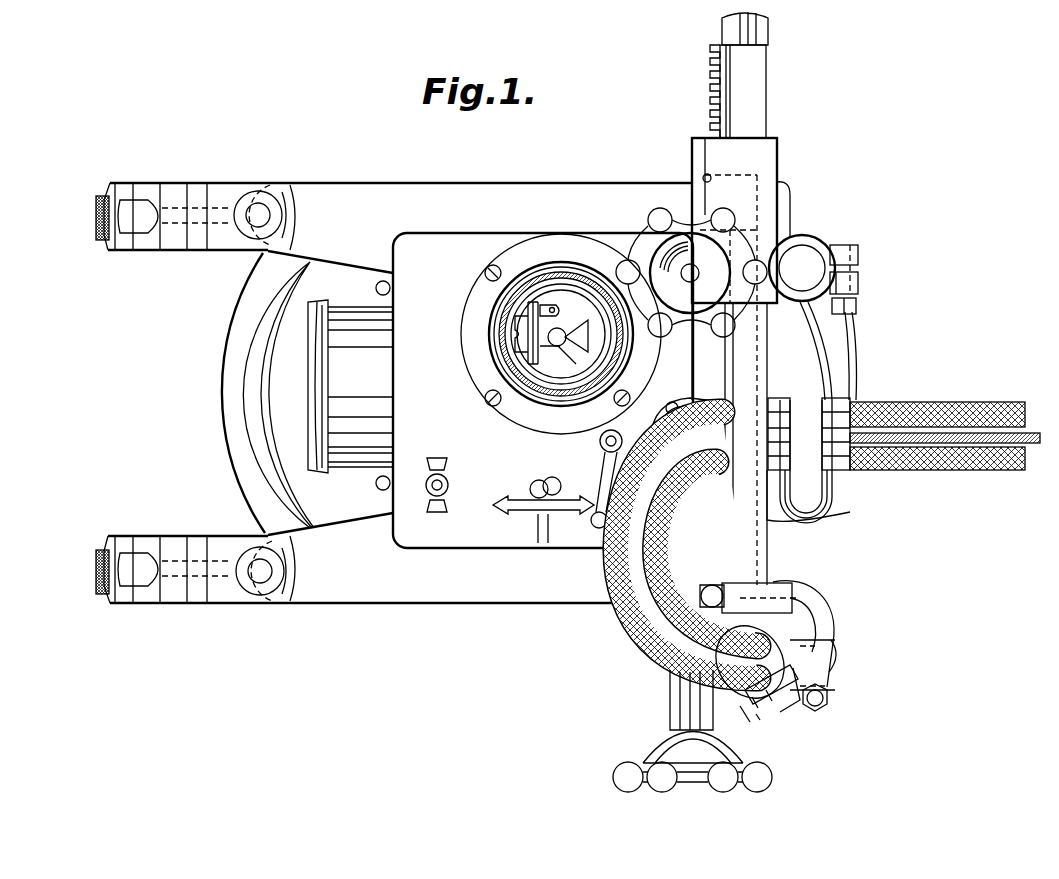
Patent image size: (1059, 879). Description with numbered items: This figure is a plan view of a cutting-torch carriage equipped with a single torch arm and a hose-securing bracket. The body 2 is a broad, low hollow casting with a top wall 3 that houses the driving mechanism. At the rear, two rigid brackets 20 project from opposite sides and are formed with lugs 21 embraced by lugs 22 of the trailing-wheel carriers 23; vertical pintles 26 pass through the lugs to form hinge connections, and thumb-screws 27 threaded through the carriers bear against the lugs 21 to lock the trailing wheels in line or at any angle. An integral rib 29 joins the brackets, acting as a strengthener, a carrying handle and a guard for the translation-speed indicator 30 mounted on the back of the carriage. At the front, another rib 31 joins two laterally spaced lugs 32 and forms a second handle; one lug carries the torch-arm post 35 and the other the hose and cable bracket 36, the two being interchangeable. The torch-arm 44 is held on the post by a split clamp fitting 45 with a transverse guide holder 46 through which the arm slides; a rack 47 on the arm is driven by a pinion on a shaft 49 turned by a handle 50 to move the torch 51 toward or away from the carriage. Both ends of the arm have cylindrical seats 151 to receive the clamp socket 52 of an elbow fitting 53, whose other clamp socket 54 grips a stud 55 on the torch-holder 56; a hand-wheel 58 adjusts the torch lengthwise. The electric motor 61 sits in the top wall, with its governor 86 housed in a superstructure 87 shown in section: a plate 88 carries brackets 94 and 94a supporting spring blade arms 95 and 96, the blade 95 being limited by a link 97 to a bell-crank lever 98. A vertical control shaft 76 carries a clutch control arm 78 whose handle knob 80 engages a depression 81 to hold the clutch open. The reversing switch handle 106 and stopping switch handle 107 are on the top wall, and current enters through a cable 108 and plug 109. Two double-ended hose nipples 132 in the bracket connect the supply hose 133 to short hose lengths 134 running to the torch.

The body 2 is at (462, 606).
The top wall 3 is at (543, 390).
The rigid brackets 20 is at (324, 190).
The lugs 21 is at (284, 186).
The lugs 22 is at (262, 190).
The trailing-wheel carriers 23 is at (172, 183).
The vertical pintles 26 is at (262, 215).
The thumb-screws 27 is at (103, 215).
The integral rib 29 is at (236, 458).
The translation-speed indicator 30 is at (346, 473).
The rib 31 is at (832, 350).
The lugs 32 is at (790, 240).
The torch-arm post 35 is at (802, 268).
The hose and cable bracket 36 is at (818, 508).
The torch-arm 44 is at (766, 108).
The split clamp fitting 45 is at (836, 244).
The transverse guide holder 46 is at (777, 166).
The rack 47 is at (710, 102).
The shaft 49 is at (689, 283).
The handle 50 is at (650, 218).
The torch 51 is at (800, 712).
The clamp socket 52 is at (760, 596).
The elbow fitting 53 is at (818, 616).
The clamp socket 54 is at (830, 698).
The stud 55 is at (834, 658).
The torch-holder 56 is at (752, 716).
The hand-wheel 58 is at (624, 764).
The electric motor 61 is at (612, 360).
The vertical control shaft 76 is at (600, 441).
The clutch control arm 78 is at (600, 478).
The handle knob 80 is at (612, 540).
The depression 81 is at (592, 526).
The governor 86 is at (510, 398).
The superstructure 87 is at (534, 390).
The plate 88 is at (600, 340).
The bracket 94 is at (548, 312).
The bracket 94a is at (528, 317).
The spring blade arm 95 is at (566, 314).
The spring blade arm 96 is at (525, 342).
The link 97 is at (564, 351).
The bell-crank lever 98 is at (578, 372).
The handle of reversing switch 106 is at (536, 478).
The handle of starting and stopping switch 107 is at (443, 476).
The cable 108 is at (925, 436).
The plug 109 is at (707, 554).
The double-ended hose nipples 132 is at (824, 396).
The supply hose 133 is at (940, 400).
The short hose lengths 134 is at (612, 600).
The cylindrical seats 151 is at (758, 38).